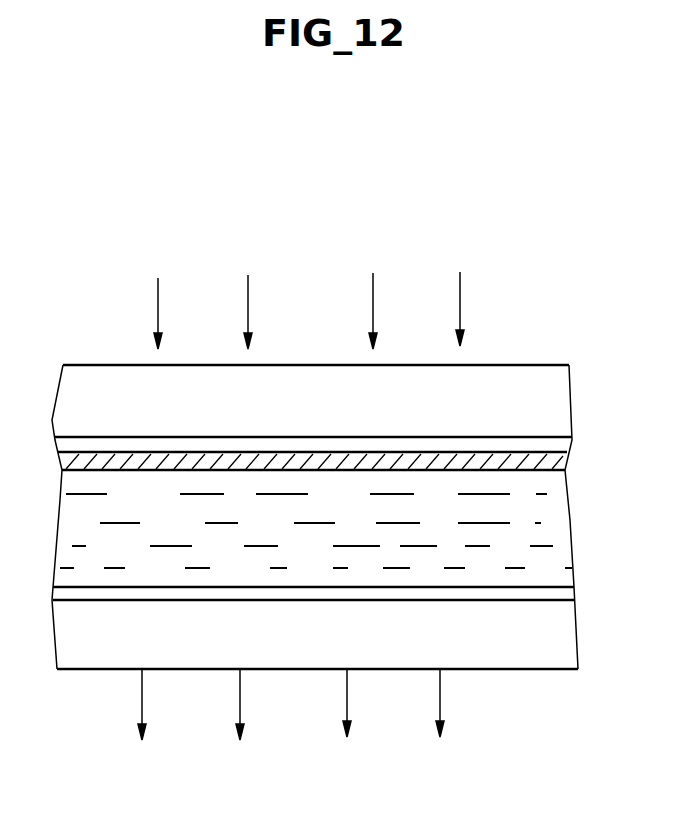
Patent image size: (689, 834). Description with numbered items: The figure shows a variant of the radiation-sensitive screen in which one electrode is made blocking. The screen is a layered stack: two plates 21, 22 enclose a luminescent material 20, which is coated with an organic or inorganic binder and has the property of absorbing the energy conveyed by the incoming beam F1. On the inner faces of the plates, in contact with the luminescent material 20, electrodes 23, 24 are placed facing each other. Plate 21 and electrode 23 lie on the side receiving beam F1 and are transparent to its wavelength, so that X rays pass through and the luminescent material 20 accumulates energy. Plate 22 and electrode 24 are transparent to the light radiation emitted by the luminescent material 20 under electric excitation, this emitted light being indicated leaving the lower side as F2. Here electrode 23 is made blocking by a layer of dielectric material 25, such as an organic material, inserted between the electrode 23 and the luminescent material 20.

The luminescent material 20 is at (560, 527).
The plate 21 is at (508, 377).
The plate 22 is at (570, 638).
The electrode 23 is at (563, 446).
The electrode 24 is at (565, 597).
The dielectric material layer 25 is at (66, 460).
The beam F1 is at (172, 300).
The transmitted light F2 is at (423, 698).